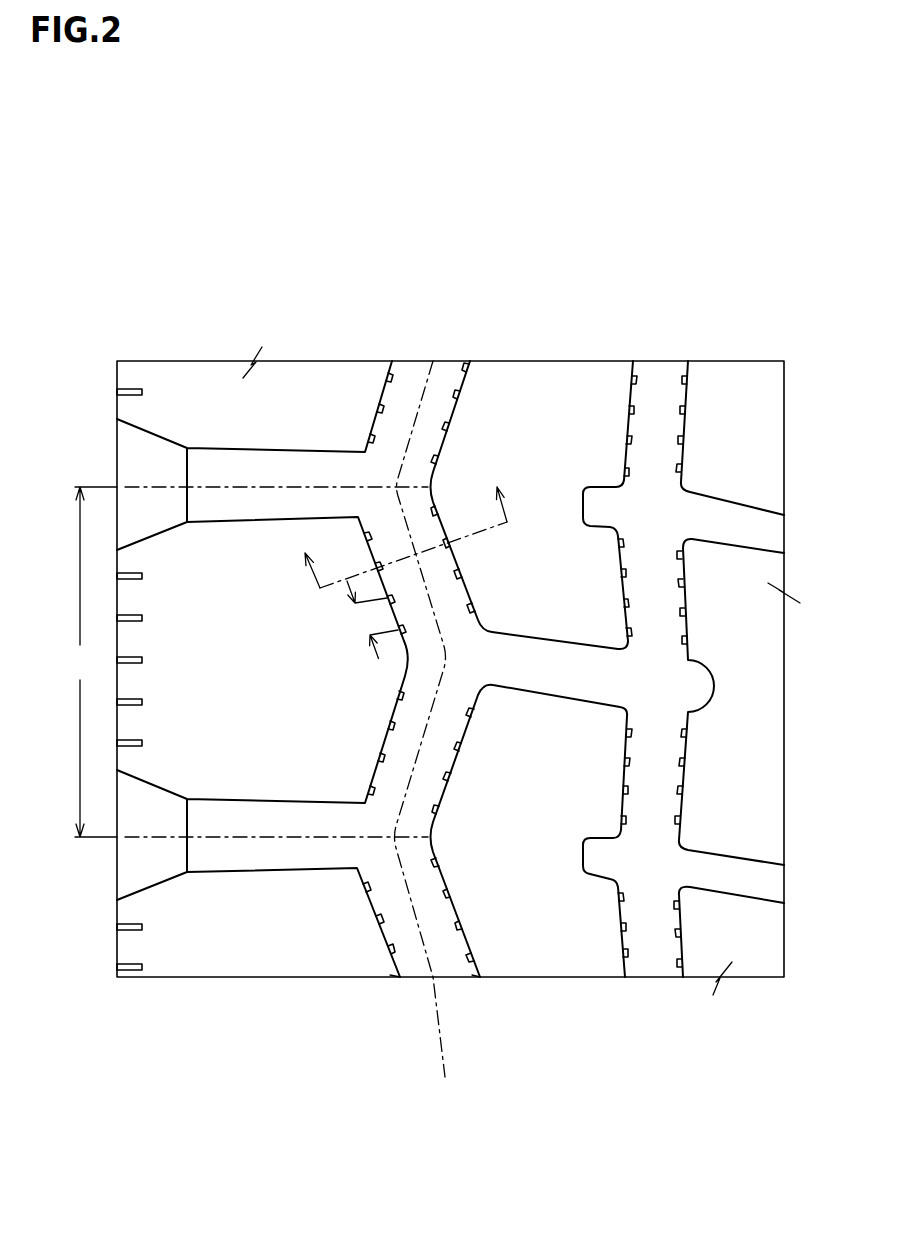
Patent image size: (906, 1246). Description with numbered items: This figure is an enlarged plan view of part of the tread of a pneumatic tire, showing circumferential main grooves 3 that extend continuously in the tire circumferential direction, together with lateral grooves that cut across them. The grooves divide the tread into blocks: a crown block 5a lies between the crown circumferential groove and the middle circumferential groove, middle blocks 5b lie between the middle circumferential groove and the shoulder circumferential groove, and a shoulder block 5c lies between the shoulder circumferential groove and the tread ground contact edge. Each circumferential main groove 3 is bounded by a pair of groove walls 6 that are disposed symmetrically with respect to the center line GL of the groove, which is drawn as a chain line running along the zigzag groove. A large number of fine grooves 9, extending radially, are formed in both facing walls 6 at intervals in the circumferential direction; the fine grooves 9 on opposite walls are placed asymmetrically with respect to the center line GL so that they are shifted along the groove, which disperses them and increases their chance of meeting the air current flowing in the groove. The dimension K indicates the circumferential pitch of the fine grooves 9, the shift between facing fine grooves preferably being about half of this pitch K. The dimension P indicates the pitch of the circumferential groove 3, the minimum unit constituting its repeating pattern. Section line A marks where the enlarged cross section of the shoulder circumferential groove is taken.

The circumferential main groove 3 is at (400, 412).
The crown block 5a is at (757, 766).
The middle block 5b is at (535, 861).
The shoulder block 5c is at (287, 663).
The groove wall 6 is at (398, 977).
The fine groove 9 is at (363, 440).
The center line of the groove GL is at (429, 734).
The pitch of the circumferential groove P is at (93, 662).
The pitch of the fine grooves K is at (367, 620).
The section line A- A is at (405, 537).